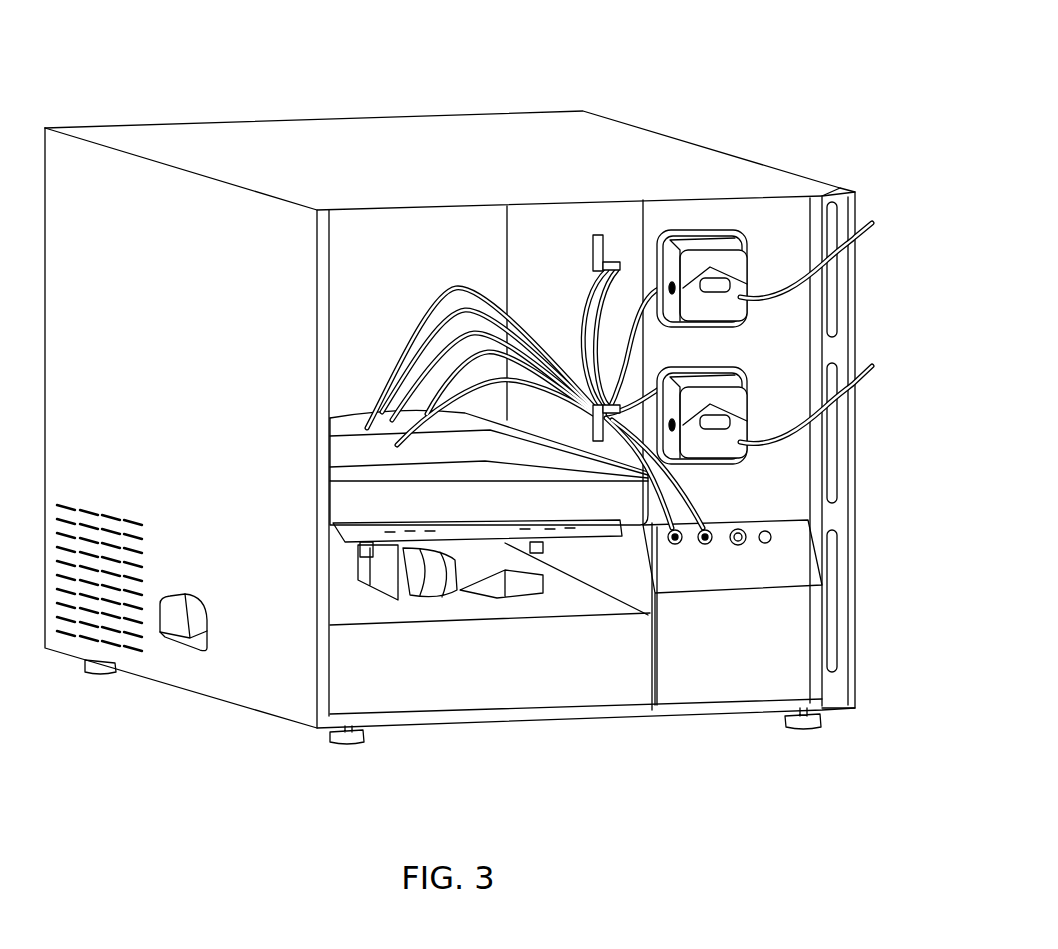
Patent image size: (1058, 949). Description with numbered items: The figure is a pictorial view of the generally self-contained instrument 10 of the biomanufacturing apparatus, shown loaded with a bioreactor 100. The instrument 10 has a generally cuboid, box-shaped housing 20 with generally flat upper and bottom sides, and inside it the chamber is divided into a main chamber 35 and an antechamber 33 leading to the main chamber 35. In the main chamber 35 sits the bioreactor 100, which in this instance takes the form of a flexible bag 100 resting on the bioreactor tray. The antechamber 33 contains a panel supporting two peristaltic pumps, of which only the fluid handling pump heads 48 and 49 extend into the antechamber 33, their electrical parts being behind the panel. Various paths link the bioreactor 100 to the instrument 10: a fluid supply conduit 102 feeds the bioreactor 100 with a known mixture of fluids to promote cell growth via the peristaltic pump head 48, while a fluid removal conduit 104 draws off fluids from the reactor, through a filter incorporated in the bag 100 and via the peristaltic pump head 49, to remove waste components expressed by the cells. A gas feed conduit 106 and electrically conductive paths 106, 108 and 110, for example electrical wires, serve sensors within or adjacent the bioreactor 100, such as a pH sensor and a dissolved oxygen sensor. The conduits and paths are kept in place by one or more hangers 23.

The instrument 10 is at (249, 82).
The housing 20 is at (482, 112).
The hangers 23 is at (610, 425).
The antechamber 33 is at (786, 378).
The main chamber 35 is at (430, 268).
The peristaltic pump head 48 is at (753, 312).
The peristaltic pump head 49 is at (733, 445).
The bioreactor 100 is at (478, 443).
The fluid supply conduit 102 is at (845, 272).
The fluid removal conduit 104 is at (865, 377).
The gas feed conduit 106 is at (745, 547).
The electrically conductive path 108 is at (703, 545).
The electrically conductive path 110 is at (672, 545).